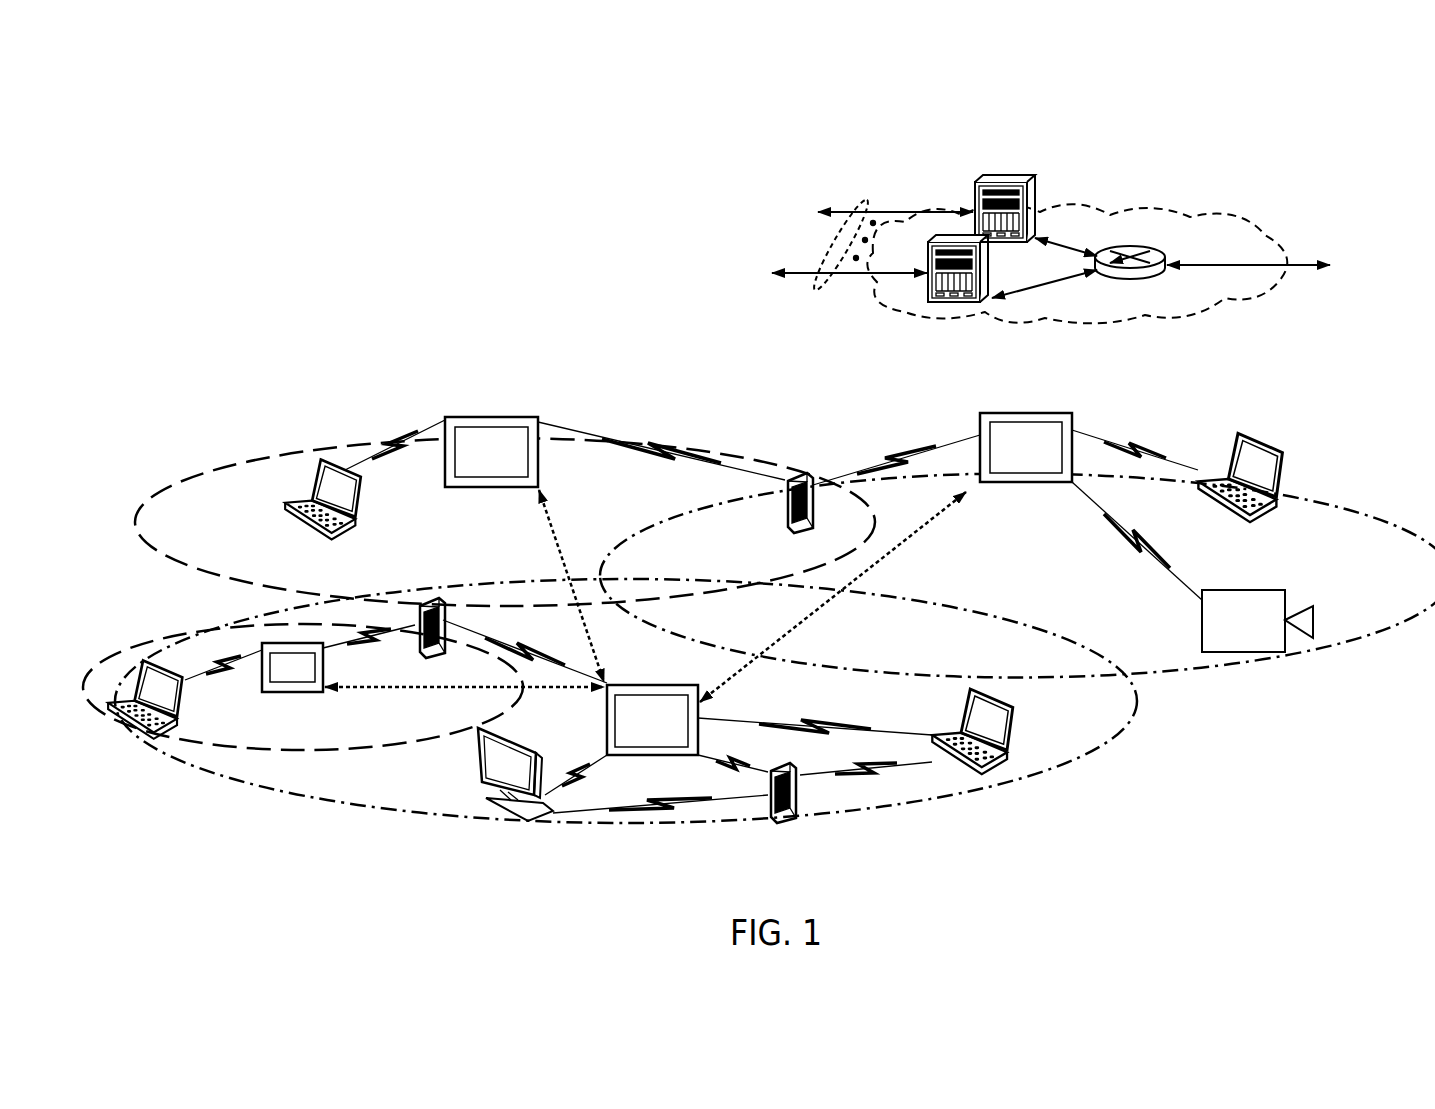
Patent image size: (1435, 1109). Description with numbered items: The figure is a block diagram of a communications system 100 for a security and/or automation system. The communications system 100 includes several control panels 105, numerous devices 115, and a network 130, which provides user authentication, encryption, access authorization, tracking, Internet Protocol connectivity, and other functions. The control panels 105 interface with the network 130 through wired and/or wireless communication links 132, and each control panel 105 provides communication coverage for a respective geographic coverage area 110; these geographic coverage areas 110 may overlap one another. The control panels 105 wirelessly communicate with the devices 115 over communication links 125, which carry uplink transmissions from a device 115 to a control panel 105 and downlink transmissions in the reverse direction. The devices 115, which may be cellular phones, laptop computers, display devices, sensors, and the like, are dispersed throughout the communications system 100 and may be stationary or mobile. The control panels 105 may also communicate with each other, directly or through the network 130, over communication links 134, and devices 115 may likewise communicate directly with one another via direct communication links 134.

The communications system 100 is at (759, 481).
The control panel 105 is at (520, 415).
The geographic coverage area 110 is at (196, 572).
The device 115 is at (345, 525).
The communication link 125 is at (400, 432).
The network 130 is at (1180, 318).
The communication link 132 is at (832, 283).
The communication link 134 is at (582, 613).